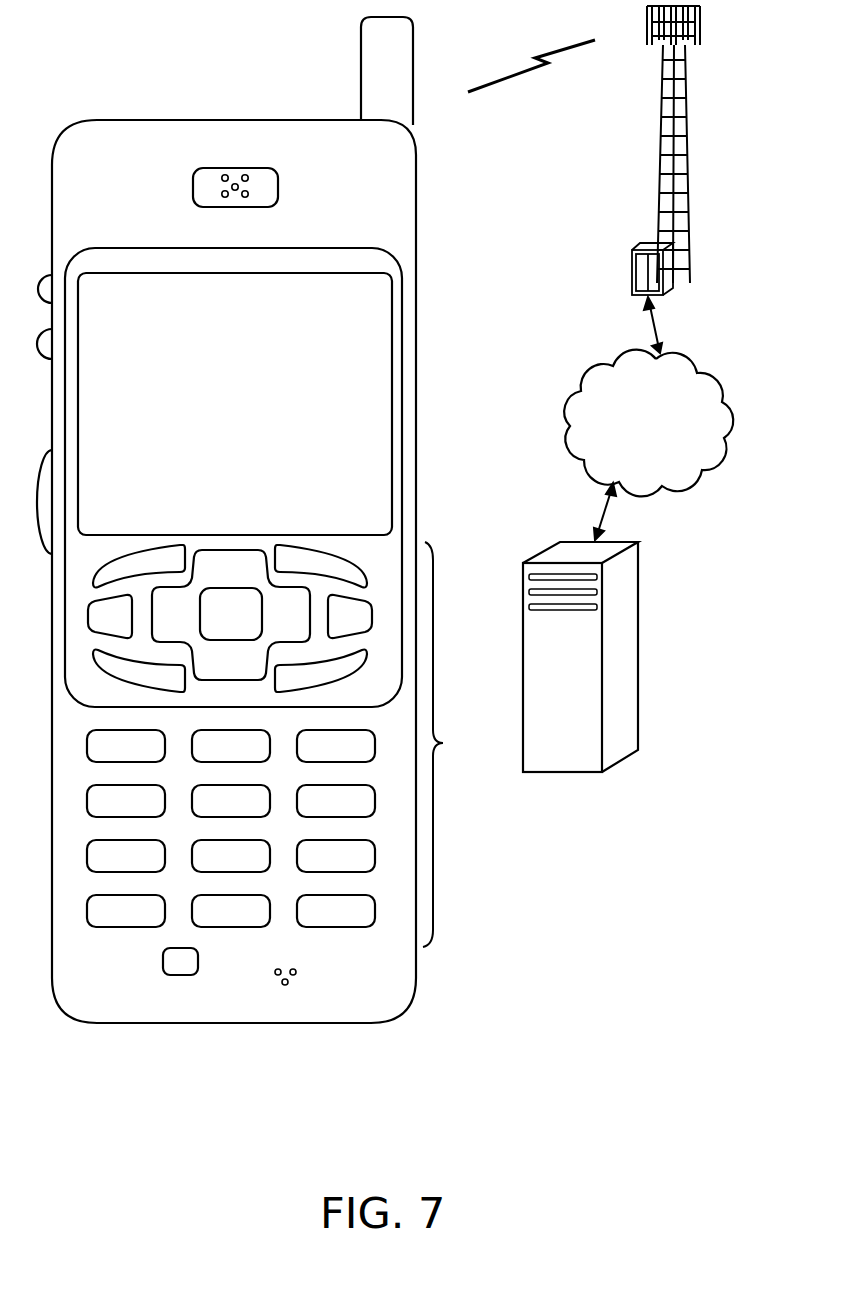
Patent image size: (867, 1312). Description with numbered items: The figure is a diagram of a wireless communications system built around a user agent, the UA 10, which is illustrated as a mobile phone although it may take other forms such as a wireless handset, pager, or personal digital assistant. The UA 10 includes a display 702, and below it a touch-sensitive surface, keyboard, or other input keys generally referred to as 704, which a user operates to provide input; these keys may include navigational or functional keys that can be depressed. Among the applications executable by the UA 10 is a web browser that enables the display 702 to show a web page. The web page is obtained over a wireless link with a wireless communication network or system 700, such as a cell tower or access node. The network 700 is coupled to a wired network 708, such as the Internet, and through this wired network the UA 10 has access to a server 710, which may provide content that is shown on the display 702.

The UA 10 is at (97, 1022).
The wireless communication network or system 700 is at (660, 162).
The display 702 is at (404, 283).
The input keys 704 is at (456, 744).
The wired network 708 is at (578, 463).
The server 710 is at (560, 772).